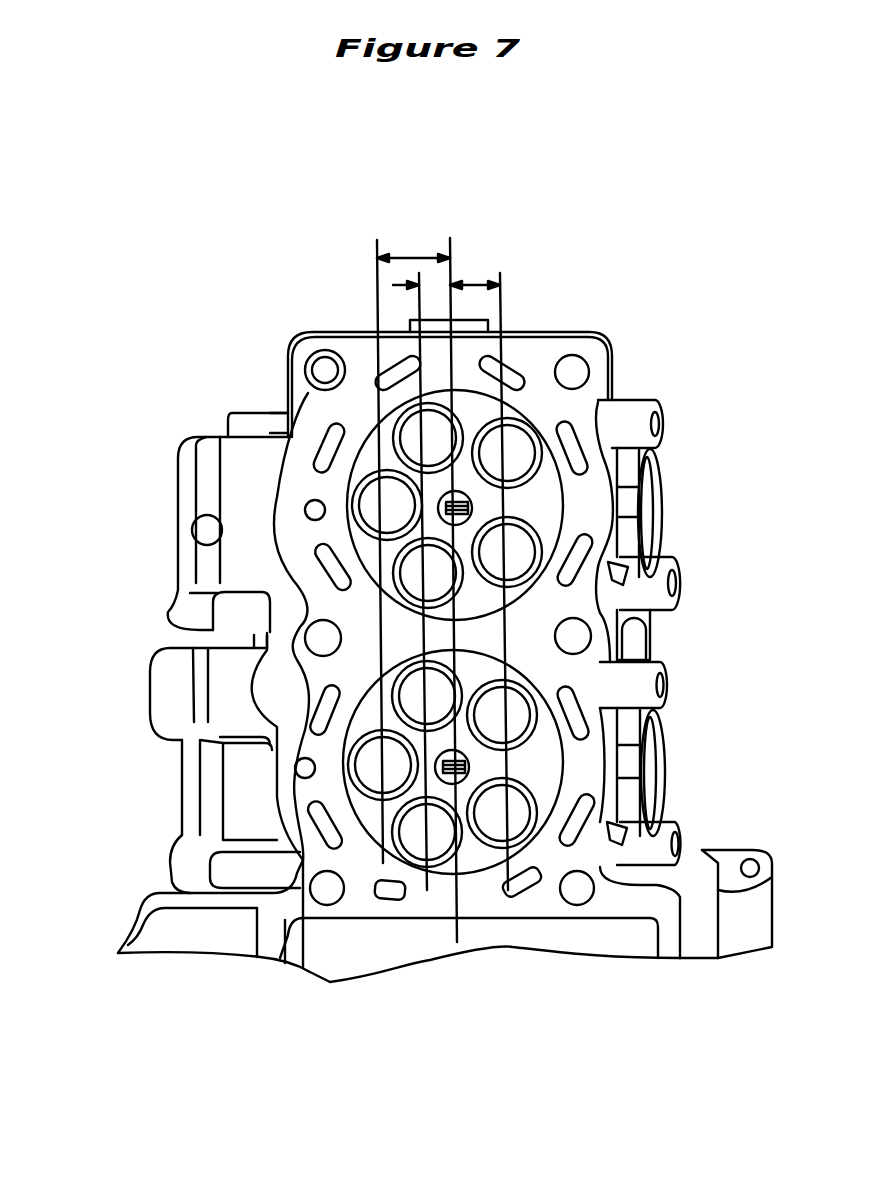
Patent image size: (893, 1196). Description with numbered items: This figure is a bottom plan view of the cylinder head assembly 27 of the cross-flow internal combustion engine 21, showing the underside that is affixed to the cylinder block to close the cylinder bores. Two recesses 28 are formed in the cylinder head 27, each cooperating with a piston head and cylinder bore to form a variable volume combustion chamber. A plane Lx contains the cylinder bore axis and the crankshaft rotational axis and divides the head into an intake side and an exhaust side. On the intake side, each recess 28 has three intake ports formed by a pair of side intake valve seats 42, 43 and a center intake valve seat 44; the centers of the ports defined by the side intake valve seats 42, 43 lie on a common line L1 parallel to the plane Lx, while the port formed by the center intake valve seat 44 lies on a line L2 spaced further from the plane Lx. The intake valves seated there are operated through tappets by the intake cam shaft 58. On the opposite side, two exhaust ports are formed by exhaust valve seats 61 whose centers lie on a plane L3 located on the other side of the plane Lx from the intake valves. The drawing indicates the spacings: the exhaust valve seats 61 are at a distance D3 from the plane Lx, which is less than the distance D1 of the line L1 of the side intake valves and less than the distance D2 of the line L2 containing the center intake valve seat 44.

The internal combustion engine 21 is at (658, 338).
The cylinder head assembly 27 is at (172, 473).
The recess 28 is at (488, 420).
The side intake valve seat 42 is at (410, 580).
The side intake valve seat 43 is at (410, 424).
The center intake valve seat 44 is at (366, 492).
The intake cam shaft 58 is at (668, 515).
The exhaust valve seat 61 is at (527, 447).
The common line of side intake ports L1 is at (427, 878).
The line of center intake port L2 is at (380, 863).
The plane of exhaust ports L3 is at (503, 300).
The plane containing cylinder bore axis Lx is at (450, 242).
The distance of plane L1 from plane Lx D1 is at (433, 284).
The distance of plane L2 from plane Lx D2 is at (400, 255).
The distance of exhaust ports from plane Lx D3 is at (480, 283).